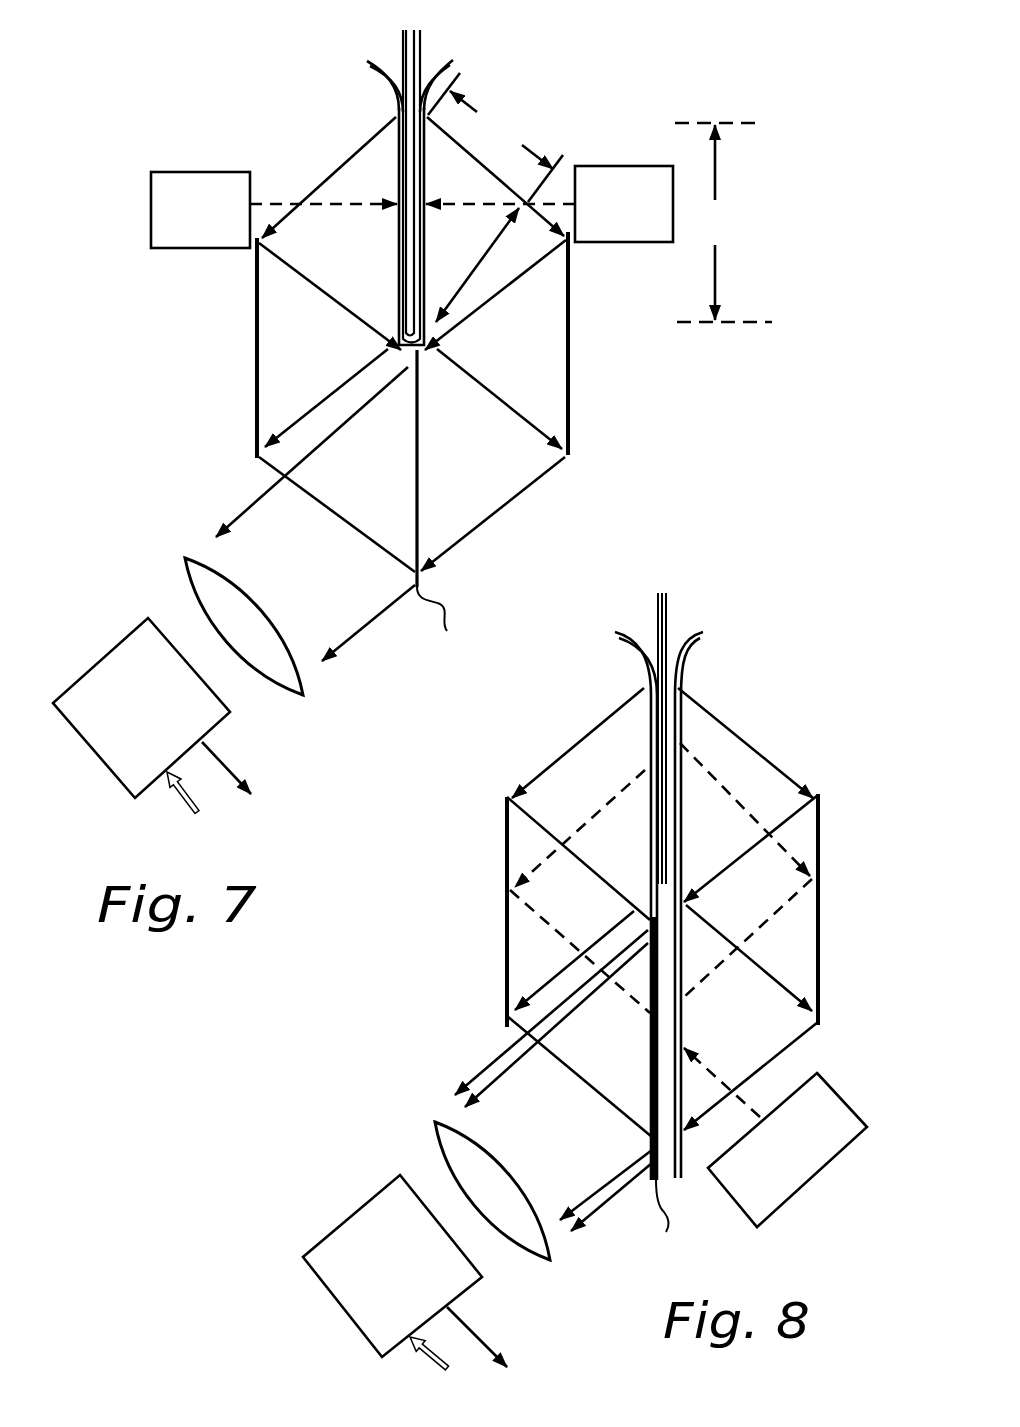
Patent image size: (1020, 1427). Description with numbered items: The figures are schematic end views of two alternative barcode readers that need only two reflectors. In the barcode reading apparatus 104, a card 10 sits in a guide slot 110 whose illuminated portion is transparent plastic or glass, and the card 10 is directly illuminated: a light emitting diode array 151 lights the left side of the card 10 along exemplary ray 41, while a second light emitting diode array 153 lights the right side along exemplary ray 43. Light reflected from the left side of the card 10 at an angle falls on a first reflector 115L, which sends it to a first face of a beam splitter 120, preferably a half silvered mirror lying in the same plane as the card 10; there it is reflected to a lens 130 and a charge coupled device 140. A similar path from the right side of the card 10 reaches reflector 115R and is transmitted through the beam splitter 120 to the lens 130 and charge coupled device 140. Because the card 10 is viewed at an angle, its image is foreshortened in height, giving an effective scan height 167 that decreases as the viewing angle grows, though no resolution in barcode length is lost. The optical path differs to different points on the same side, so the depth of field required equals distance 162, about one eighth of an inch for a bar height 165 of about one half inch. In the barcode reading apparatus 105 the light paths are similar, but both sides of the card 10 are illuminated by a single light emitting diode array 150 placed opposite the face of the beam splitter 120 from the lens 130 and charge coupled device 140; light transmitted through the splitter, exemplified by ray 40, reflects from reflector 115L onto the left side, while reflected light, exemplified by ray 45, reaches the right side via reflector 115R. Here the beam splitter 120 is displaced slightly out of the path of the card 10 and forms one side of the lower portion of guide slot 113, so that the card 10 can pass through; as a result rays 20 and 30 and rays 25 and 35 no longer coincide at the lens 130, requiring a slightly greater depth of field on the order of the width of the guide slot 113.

In FIG. 7, the card 10 is at (413, 35).
In FIG. 8, the card 10 is at (662, 598).
In FIG. 7, the guide slot 110 is at (398, 105).
In FIG. 8, the guide slot 113 is at (641, 668).
In FIG. 7, the ray 20 is at (352, 168).
In FIG. 8, the ray 20 is at (590, 735).
In FIG. 7, the ray 30 is at (476, 184).
In FIG. 8, the ray 30 is at (732, 733).
In FIG. 7, the ray 25 is at (329, 386).
In FIG. 8, the ray 25 is at (556, 978).
In FIG. 7, the ray 35 is at (541, 386).
In FIG. 8, the ray 35 is at (800, 950).
In FIG. 8, the ray 40 is at (610, 795).
In FIG. 8, the ray 45 is at (715, 803).
In FIG. 7, the ray 41 is at (356, 213).
In FIG. 7, the ray 43 is at (472, 208).
In FIG. 7, the barcode reading apparatus 104 is at (565, 104).
In FIG. 8, the barcode reading apparatus 105 is at (744, 670).
In FIG. 7, the first reflector 115L is at (256, 330).
In FIG. 8, the first reflector 115L is at (507, 893).
In FIG. 7, the reflector 115R is at (569, 300).
In FIG. 8, the reflector 115R is at (819, 860).
In FIG. 7, the beam splitter 120 is at (443, 498).
In FIG. 8, the beam splitter 120 is at (688, 1217).
In FIG. 7, the lens 130 is at (188, 559).
In FIG. 8, the lens 130 is at (437, 1121).
In FIG. 7, the charge coupled device 140 is at (110, 656).
In FIG. 8, the charge coupled device 140 is at (358, 1206).
In FIG. 8, the light emitting diode array 150 is at (792, 1196).
In FIG. 7, the light emitting diode array 151 is at (171, 172).
In FIG. 7, the light emitting diode array 153 is at (634, 166).
In FIG. 7, the distance 162 is at (495, 137).
In FIG. 7, the bar height 165 is at (723, 222).
In FIG. 7, the effective scan height 167 is at (477, 265).